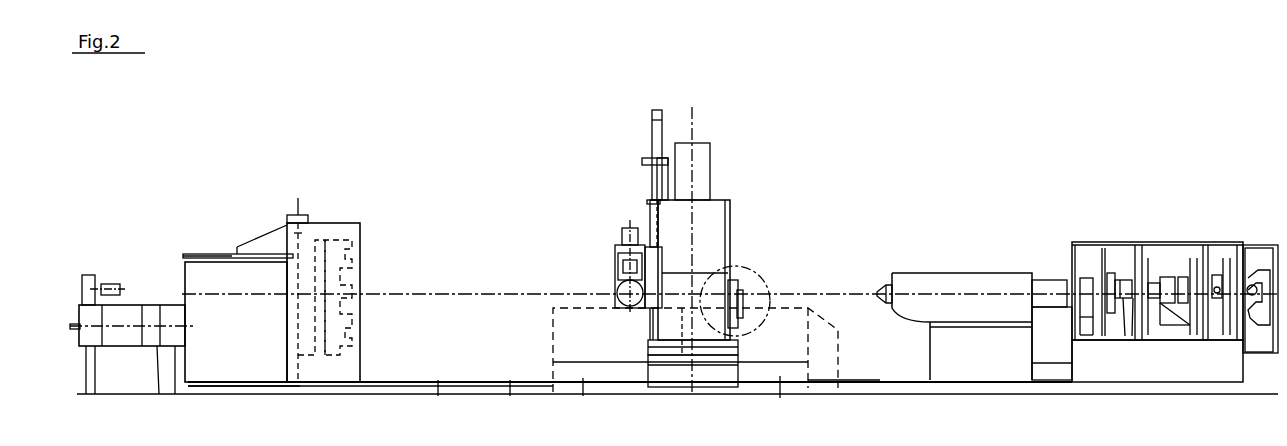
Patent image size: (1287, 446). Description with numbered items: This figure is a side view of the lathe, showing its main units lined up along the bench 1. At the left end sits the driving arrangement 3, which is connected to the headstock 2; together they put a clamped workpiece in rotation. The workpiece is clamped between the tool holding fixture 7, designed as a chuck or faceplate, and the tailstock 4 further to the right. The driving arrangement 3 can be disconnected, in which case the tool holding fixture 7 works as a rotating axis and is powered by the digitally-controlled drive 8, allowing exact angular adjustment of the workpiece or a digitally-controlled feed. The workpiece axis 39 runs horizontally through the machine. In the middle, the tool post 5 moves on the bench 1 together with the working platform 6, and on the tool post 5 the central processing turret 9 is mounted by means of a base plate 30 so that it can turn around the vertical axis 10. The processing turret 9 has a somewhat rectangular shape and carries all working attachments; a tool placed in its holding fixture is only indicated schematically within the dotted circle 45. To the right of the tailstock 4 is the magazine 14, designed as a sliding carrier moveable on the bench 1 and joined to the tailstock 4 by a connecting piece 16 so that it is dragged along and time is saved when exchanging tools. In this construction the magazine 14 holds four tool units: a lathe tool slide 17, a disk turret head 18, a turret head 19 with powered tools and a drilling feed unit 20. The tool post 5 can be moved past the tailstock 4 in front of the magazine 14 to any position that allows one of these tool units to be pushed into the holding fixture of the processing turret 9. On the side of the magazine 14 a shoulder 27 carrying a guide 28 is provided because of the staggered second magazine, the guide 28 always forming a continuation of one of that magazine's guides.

The bench 1 is at (477, 388).
The headstock 2 is at (258, 370).
The driving arrangement 3 is at (122, 337).
The tailstock 4 is at (1013, 323).
The tool post 5 is at (667, 383).
The working platform 6 is at (573, 370).
The tool holding fixture 7 is at (326, 245).
The digitally-controlled drive 8 is at (295, 215).
The processing turret 9 is at (712, 205).
The vertical axis 10 is at (693, 142).
The magazine 14 is at (1172, 373).
The connecting piece 16 is at (1060, 373).
The lathe tool slide 17 is at (1078, 280).
The disk turret head 18 is at (1110, 275).
The turret head with powered tools 19 is at (1168, 275).
The drilling feed unit 20 is at (1217, 275).
The shoulder 27 is at (1262, 245).
The guide 28 is at (1267, 333).
The base plate 30 is at (705, 350).
The workpiece axis 39 is at (502, 293).
The circle 45 is at (748, 267).